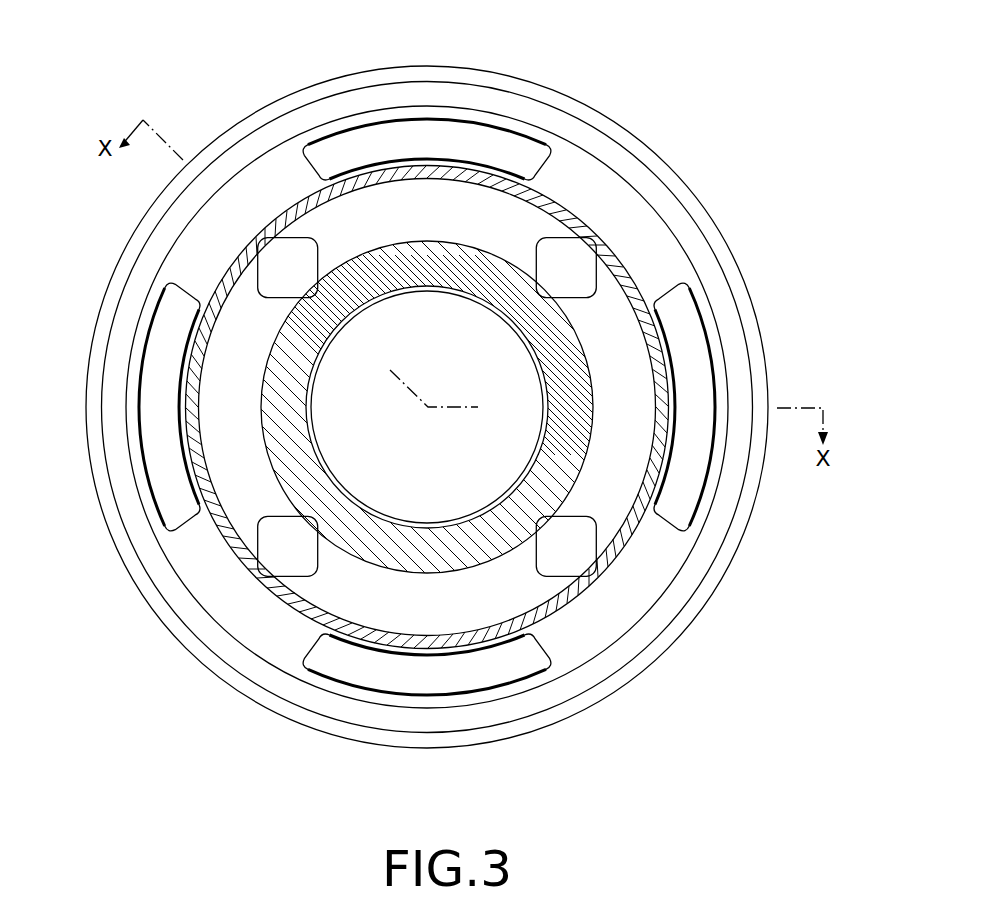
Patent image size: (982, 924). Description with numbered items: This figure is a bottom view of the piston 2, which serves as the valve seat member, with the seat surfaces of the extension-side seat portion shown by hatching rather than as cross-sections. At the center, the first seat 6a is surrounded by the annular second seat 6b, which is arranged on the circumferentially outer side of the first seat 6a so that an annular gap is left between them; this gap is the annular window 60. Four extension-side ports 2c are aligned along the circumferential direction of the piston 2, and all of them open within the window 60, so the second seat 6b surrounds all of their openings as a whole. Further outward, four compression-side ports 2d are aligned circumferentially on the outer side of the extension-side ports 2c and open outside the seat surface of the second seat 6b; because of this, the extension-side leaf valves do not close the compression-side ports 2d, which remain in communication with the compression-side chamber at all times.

The piston 2 is at (606, 104).
The extension-side port 2c is at (277, 257).
The compression-side port 2d is at (417, 130).
The first seat 6a is at (415, 532).
The second seat 6b is at (636, 270).
The window 60 is at (232, 450).